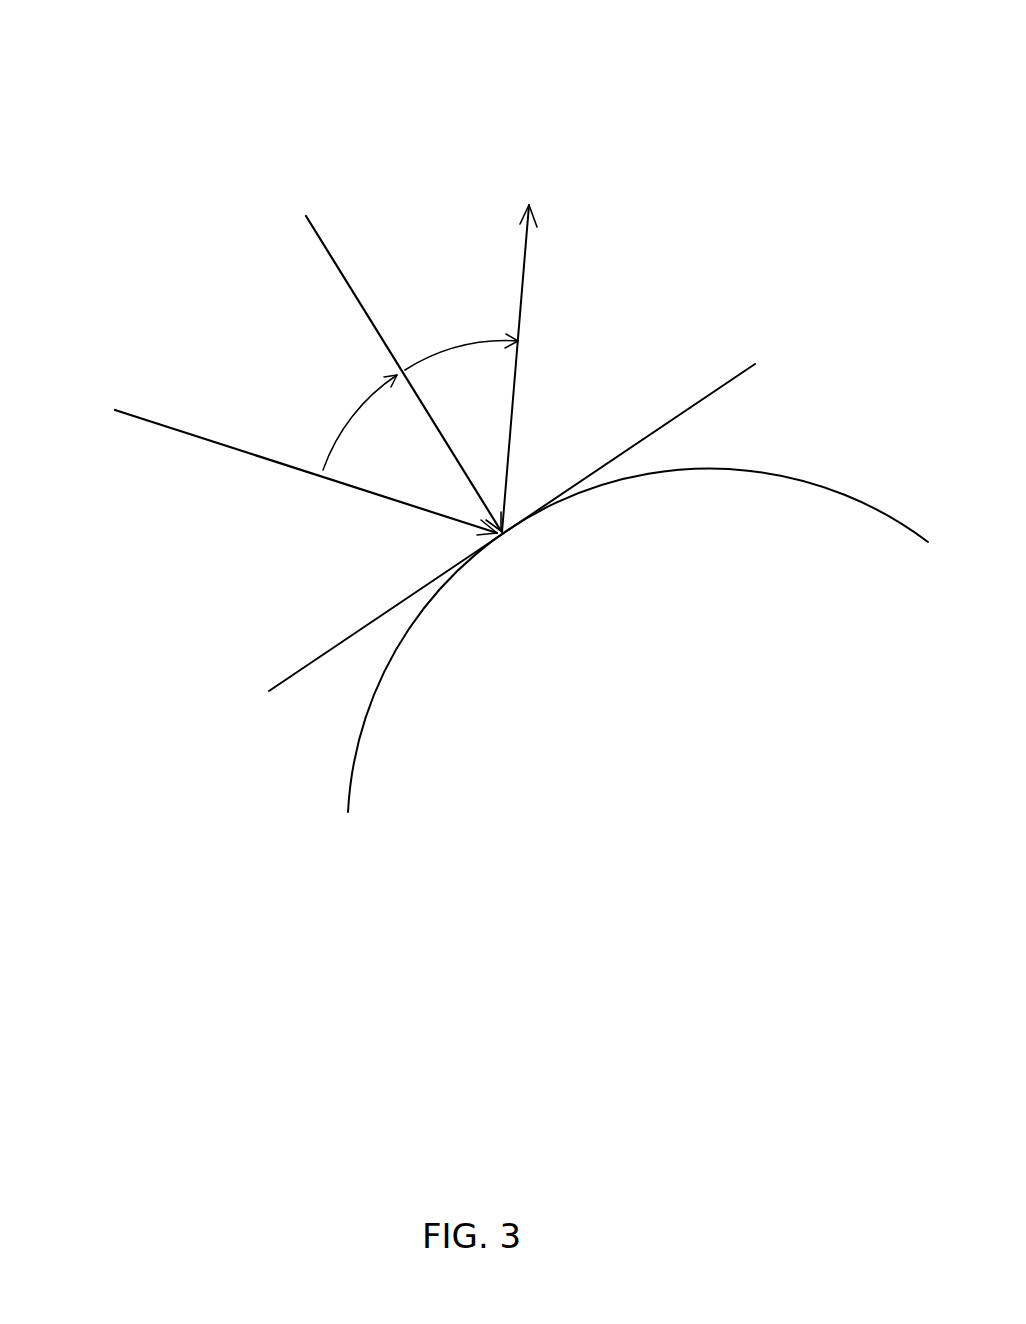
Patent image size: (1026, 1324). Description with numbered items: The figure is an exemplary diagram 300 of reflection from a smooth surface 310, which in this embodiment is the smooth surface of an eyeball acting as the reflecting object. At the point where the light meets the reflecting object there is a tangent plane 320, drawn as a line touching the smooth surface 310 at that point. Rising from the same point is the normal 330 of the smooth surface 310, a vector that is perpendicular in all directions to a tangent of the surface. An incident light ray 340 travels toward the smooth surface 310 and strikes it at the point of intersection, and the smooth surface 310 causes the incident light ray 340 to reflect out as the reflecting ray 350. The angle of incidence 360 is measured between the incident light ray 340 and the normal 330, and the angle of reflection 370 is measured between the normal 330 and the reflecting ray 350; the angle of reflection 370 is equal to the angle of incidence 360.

The diagram 300 is at (400, 958).
The smooth surface 310 is at (763, 477).
The tangent plane 320 is at (288, 680).
The normal 330 is at (315, 228).
The incident light ray 340 is at (127, 413).
The reflecting ray 350 is at (522, 295).
The angle of incidence 360 is at (350, 419).
The angle of reflection 370 is at (447, 349).